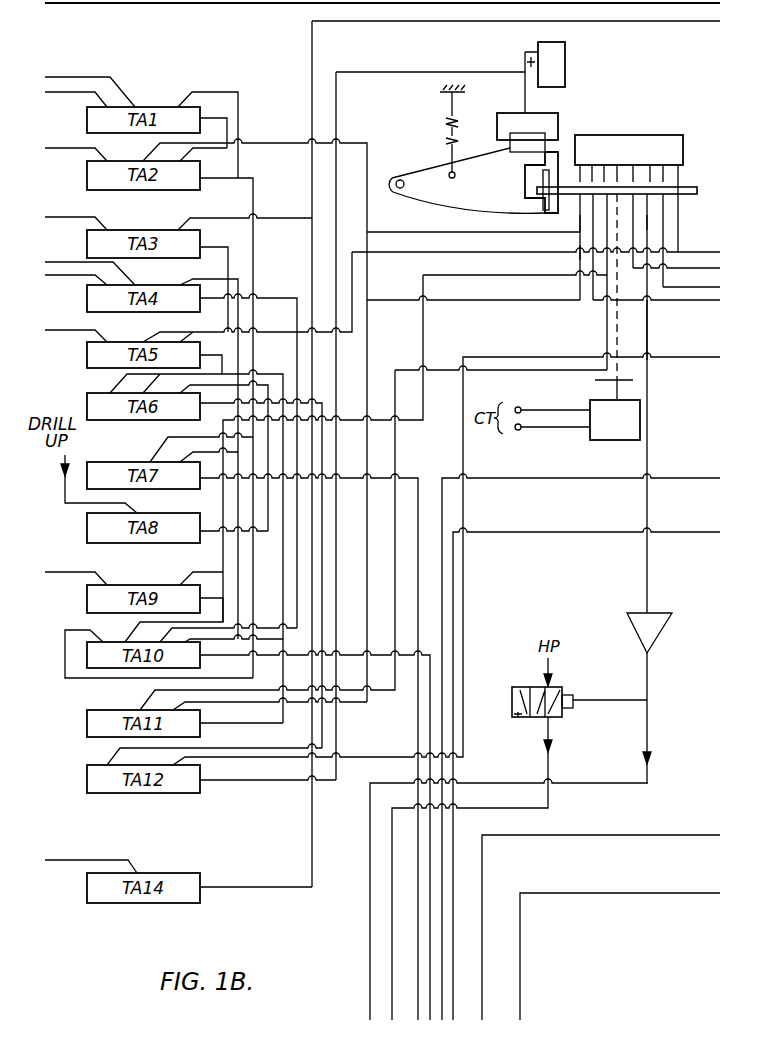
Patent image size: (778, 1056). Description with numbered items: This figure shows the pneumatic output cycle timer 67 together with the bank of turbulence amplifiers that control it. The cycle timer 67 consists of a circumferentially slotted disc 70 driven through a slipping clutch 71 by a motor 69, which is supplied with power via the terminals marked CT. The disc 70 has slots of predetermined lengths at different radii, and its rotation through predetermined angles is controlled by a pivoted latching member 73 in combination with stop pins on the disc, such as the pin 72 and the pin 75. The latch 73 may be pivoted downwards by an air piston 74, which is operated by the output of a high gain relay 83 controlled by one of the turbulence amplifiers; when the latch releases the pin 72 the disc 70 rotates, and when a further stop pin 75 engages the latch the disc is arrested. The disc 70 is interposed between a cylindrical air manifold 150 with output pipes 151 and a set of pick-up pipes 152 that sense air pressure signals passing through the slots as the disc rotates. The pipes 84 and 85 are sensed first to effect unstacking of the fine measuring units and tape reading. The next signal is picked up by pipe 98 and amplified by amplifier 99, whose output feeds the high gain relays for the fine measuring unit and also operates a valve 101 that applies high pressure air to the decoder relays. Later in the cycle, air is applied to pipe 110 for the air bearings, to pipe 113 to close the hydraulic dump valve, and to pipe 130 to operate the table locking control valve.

The pneumatic output cycle timer 67 is at (572, 146).
The cycle timer motor 69 is at (632, 420).
The circumferentially slotted disc 70 is at (688, 192).
The slipping clutch 71 is at (625, 377).
The pin 72 is at (545, 208).
The pivoted latching member 73 is at (418, 178).
The air piston 74 is at (513, 148).
The pin 75 is at (543, 180).
The high gain relay 83 is at (567, 60).
The pick-up pipe 84 is at (585, 217).
The pick-up pipe 85 is at (578, 248).
The pick-up pipe 98 is at (648, 223).
The amplifier 99 is at (653, 630).
The valve 101 is at (556, 692).
The pipe 110 is at (622, 210).
The pipe 113 is at (650, 232).
The pipe 130 is at (662, 264).
The cylindrical air manifold 150 is at (640, 135).
The output pipes 151 is at (683, 178).
The pick-up pipes 152 is at (645, 210).